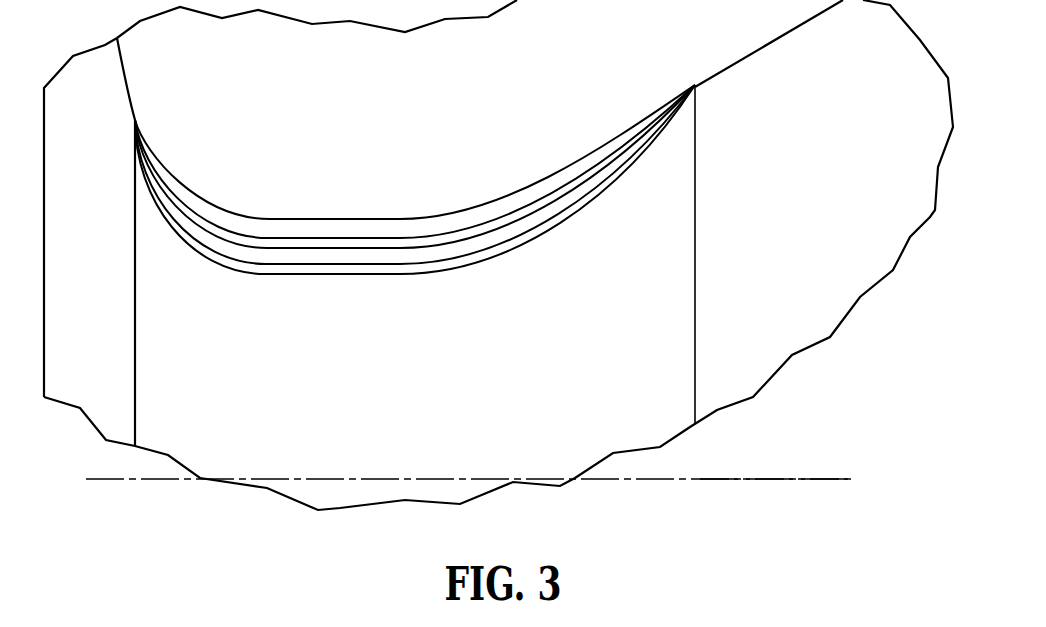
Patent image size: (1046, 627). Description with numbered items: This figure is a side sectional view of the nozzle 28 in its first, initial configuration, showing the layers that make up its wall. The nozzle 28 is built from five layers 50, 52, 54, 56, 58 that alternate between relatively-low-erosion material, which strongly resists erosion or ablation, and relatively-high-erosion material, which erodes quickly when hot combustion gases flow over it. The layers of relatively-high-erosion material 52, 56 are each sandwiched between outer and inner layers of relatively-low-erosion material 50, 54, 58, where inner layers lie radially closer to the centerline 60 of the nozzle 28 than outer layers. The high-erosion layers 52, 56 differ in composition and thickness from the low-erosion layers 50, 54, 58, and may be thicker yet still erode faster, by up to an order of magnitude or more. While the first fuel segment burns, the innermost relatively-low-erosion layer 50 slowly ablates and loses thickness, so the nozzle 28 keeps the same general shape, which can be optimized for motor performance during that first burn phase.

The nozzle 28 is at (207, 361).
The innermost relatively-low-erosion material layer 50 is at (263, 274).
The relatively-high-erosion material layer 52 is at (338, 255).
The relatively-low-erosion material layer 54 is at (407, 242).
The relatively-high-erosion material layer 56 is at (467, 218).
The relatively-low-erosion material layer 58 is at (513, 175).
The centerline 60 is at (838, 478).